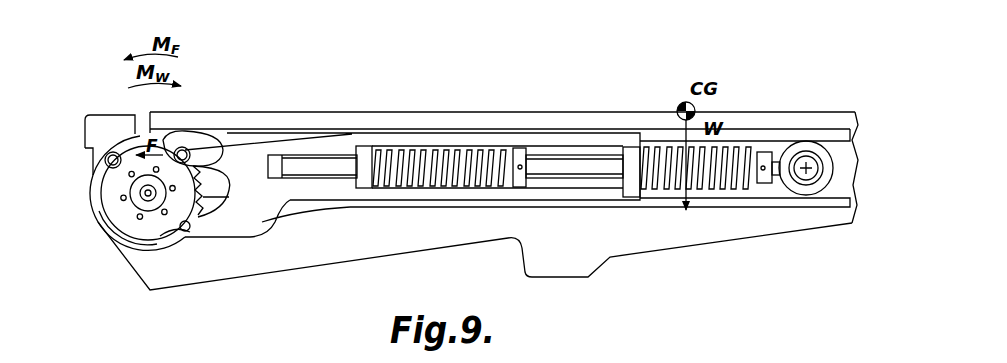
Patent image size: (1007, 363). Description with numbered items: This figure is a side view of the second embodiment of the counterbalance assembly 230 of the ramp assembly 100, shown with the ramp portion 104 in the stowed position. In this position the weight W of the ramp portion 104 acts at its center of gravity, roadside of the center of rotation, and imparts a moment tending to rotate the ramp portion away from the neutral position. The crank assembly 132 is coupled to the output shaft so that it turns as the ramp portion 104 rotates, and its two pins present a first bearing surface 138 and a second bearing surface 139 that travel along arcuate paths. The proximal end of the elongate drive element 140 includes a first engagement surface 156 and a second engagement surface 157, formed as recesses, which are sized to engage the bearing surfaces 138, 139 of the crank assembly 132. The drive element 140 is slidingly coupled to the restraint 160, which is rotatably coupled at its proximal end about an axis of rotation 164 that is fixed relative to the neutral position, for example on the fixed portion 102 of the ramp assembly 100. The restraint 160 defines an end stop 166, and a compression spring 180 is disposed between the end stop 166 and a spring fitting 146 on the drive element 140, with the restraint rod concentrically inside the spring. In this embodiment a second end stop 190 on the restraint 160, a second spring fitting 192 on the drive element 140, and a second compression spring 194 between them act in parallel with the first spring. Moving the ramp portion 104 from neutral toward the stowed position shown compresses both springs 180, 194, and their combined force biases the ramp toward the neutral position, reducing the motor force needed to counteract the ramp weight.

The ramp assembly 100 is at (676, 49).
The fixed portion 102 is at (277, 265).
The ramp portion 104 is at (783, 118).
The crank assembly 132 is at (94, 240).
The first bearing surface 138 is at (190, 150).
The second bearing surface 139 is at (112, 169).
The drive element 140 is at (310, 138).
The spring fitting 146 is at (366, 152).
The first engagement surface 156 is at (165, 137).
The second engagement surface 157 is at (160, 232).
The restraint 160 is at (583, 180).
The axis of rotation 164 is at (808, 173).
The end stop 166 is at (520, 152).
The compression spring 180 is at (440, 148).
The second end stop 190 is at (765, 183).
The second spring fitting 192 is at (628, 185).
The second compression spring 194 is at (717, 192).
The counterbalance assembly 230 is at (448, 224).